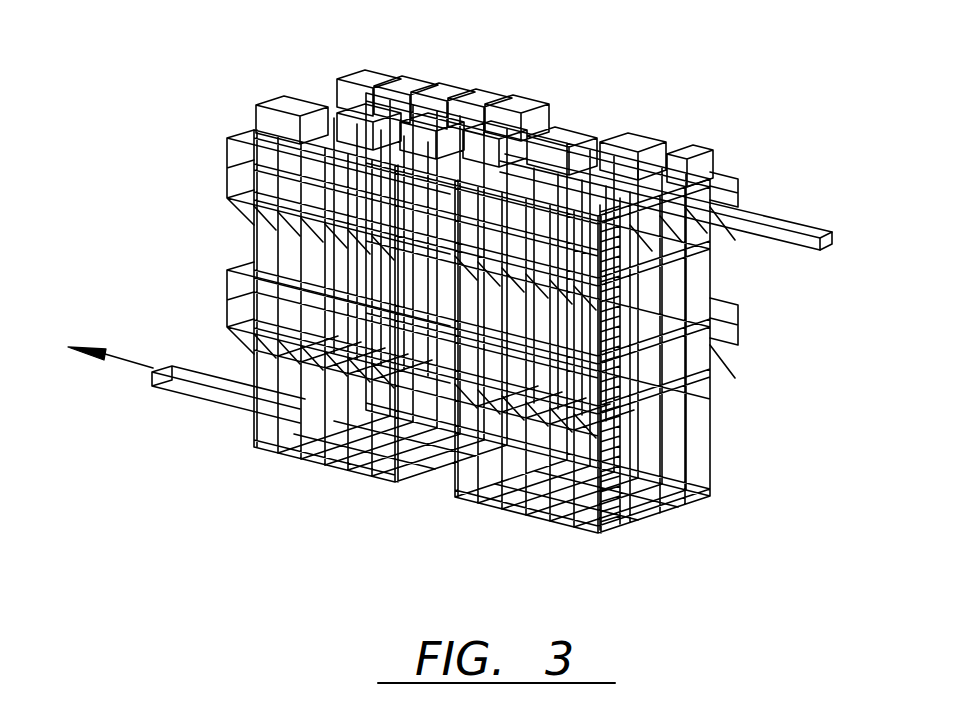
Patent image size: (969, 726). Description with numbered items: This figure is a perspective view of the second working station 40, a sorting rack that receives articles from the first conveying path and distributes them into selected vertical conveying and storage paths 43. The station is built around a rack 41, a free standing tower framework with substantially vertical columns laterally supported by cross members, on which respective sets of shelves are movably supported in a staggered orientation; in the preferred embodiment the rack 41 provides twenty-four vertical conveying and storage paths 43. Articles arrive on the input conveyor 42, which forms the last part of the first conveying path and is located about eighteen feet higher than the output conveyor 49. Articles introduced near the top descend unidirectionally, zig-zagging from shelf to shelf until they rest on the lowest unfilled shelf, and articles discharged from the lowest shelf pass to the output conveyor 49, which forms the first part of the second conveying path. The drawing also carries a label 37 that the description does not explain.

The bar end 37 is at (817, 220).
The second working station 40 is at (556, 95).
The rack 41 is at (713, 428).
The conveyor 42 is at (748, 213).
The vertical conveying and storage paths 43 is at (293, 100).
The output conveyor 49 is at (215, 395).